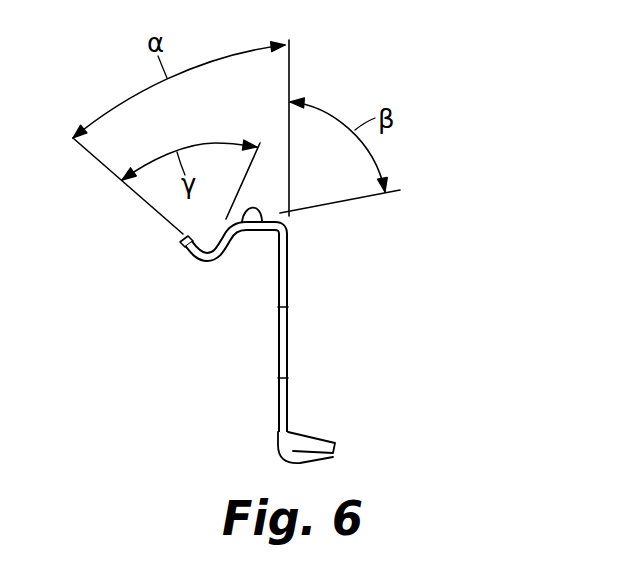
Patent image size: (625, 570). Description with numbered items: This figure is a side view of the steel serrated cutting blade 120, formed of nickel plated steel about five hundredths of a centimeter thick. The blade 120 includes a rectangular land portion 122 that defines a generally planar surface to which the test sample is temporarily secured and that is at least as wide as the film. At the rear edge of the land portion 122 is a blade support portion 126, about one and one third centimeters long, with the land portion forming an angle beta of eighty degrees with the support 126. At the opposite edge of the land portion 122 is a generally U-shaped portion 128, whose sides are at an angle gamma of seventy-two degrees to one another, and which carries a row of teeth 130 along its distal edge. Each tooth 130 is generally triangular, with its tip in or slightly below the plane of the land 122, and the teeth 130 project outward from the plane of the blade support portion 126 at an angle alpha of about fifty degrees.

The steel serrated cutting blade 120 is at (314, 243).
The land portion 122 is at (248, 212).
The blade support portion 126 is at (278, 405).
The generally U-shaped portion 128 is at (206, 263).
The teeth 130 is at (182, 246).